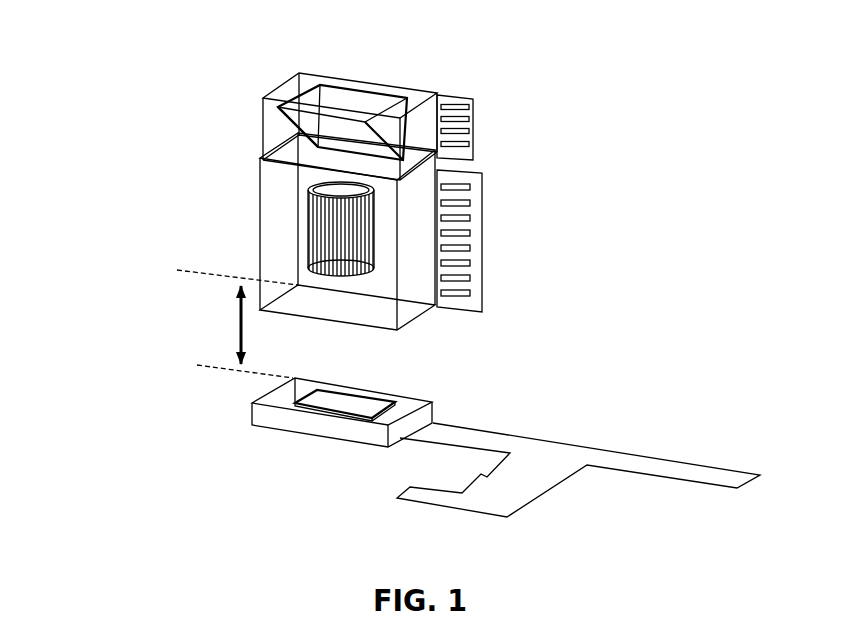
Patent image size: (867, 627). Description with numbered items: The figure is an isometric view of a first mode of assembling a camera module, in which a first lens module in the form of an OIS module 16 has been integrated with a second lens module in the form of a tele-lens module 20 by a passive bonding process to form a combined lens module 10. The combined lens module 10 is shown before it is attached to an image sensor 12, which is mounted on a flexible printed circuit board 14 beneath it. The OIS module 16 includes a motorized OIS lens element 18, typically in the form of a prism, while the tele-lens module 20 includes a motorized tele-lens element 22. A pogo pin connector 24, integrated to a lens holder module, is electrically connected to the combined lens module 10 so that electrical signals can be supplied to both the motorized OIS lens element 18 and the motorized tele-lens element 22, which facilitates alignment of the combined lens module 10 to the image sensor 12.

The combined lens module 10 is at (128, 148).
The image sensor 12 is at (400, 398).
The flexible printed circuit board 14 is at (560, 457).
The OIS module 16 is at (247, 124).
The motorized OIS lens element 18 is at (327, 94).
The tele-lens module 20 is at (250, 239).
The motorized tele-lens element 22 is at (298, 210).
The pogo pin connector 24 is at (483, 131).